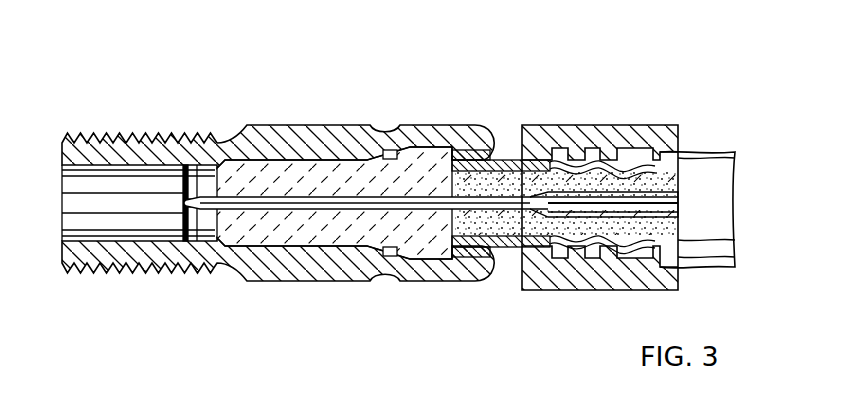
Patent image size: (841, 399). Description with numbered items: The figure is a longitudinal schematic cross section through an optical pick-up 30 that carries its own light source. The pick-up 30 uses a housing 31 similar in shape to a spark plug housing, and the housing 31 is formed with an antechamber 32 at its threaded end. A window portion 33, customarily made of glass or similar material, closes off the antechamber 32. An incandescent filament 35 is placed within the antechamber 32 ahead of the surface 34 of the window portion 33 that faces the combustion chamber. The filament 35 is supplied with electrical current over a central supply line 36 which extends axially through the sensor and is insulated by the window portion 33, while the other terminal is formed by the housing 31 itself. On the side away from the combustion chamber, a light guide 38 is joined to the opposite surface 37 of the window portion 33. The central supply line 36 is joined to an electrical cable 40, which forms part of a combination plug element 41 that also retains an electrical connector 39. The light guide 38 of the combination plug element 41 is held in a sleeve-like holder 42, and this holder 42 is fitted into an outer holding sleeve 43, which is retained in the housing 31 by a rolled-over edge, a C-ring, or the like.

The pick-up 30 is at (272, 112).
The housing 31 is at (343, 262).
The antechamber 32 is at (95, 212).
The window portion 33 is at (360, 178).
The surface facing the combustion chamber 34 is at (200, 172).
The incandescent filament 35 is at (196, 220).
The central supply line 36 is at (282, 200).
The surface opposite the combustion chamber 37 is at (448, 176).
The light guide 38 is at (542, 178).
The electrical connector 39 is at (592, 197).
The electrical cable 40 is at (648, 208).
The combination plug element 41 is at (710, 177).
The sleeve-like holder 42 is at (506, 250).
The outer holding sleeve 43 is at (477, 160).